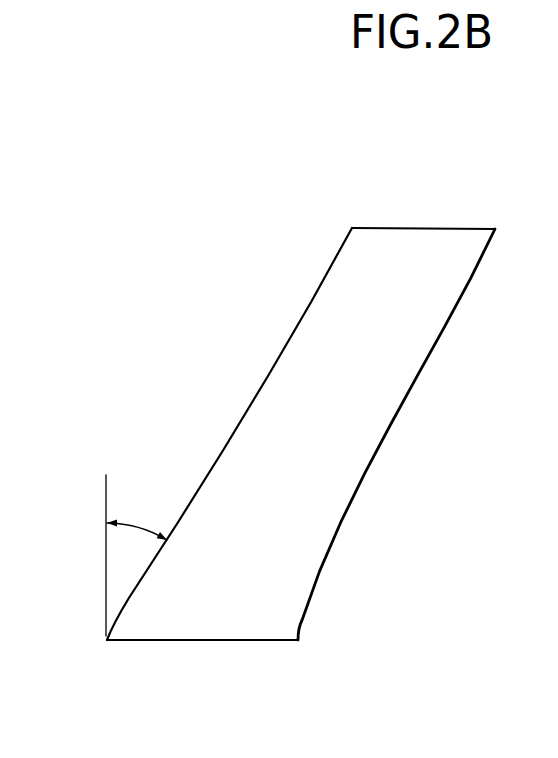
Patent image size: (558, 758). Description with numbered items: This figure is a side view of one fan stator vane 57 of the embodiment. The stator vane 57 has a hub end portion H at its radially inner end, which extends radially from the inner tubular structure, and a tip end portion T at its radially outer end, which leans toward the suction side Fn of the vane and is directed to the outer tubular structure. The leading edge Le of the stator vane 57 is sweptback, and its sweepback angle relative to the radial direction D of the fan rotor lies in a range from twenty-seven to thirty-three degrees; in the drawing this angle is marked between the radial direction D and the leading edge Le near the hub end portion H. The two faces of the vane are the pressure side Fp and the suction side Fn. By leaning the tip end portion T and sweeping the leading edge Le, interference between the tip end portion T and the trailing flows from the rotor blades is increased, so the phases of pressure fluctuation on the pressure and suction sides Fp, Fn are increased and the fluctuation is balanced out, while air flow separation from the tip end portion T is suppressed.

The stator vane 57 is at (478, 177).
The tip end portion T is at (405, 227).
The leading edge Le is at (271, 368).
The hub end portion H is at (258, 645).
The pressure side Fp is at (362, 436).
The suction side Fn is at (342, 473).
The radial direction D is at (105, 491).